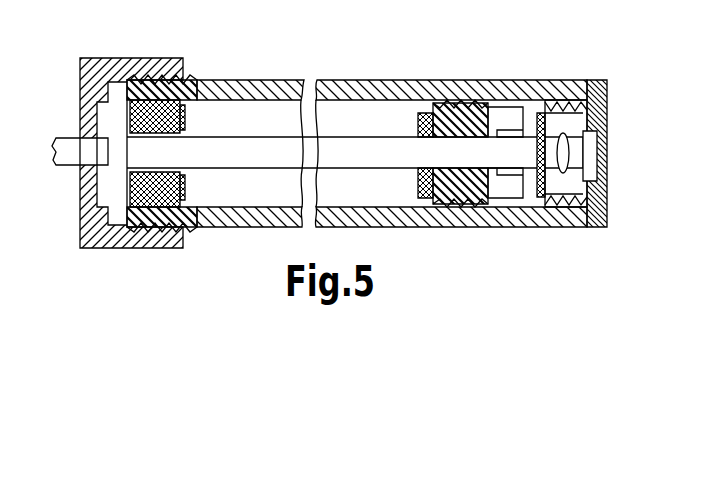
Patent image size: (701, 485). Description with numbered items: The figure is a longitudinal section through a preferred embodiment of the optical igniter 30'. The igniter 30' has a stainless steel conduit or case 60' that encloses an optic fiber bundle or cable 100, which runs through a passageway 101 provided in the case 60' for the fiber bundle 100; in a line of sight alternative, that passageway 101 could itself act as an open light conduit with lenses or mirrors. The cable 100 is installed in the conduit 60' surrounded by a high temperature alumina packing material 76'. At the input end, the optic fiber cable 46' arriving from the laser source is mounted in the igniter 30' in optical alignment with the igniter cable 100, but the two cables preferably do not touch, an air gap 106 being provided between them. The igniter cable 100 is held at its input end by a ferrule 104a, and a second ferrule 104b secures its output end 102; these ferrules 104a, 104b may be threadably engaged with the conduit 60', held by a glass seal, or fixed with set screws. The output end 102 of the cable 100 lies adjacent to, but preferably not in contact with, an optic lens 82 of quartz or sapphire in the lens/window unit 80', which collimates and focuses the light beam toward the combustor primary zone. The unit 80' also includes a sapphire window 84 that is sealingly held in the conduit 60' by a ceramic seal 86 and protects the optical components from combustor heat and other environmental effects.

The optical igniter 30' is at (365, 29).
The optic fiber cable 46' is at (64, 135).
The conduit 60' is at (463, 244).
The alumina packing material 76' is at (417, 153).
The lens/window unit 80' is at (619, 142).
The optic lens 82 is at (572, 160).
The sapphire window 84 is at (590, 150).
The ceramic seal 86 is at (588, 122).
The optic fiber bundle 100 is at (258, 152).
The passageway 101 is at (392, 137).
The output end 102 is at (540, 150).
The ferrule 104a is at (155, 95).
The ferrule 104b is at (458, 117).
The air gap 106 is at (118, 158).